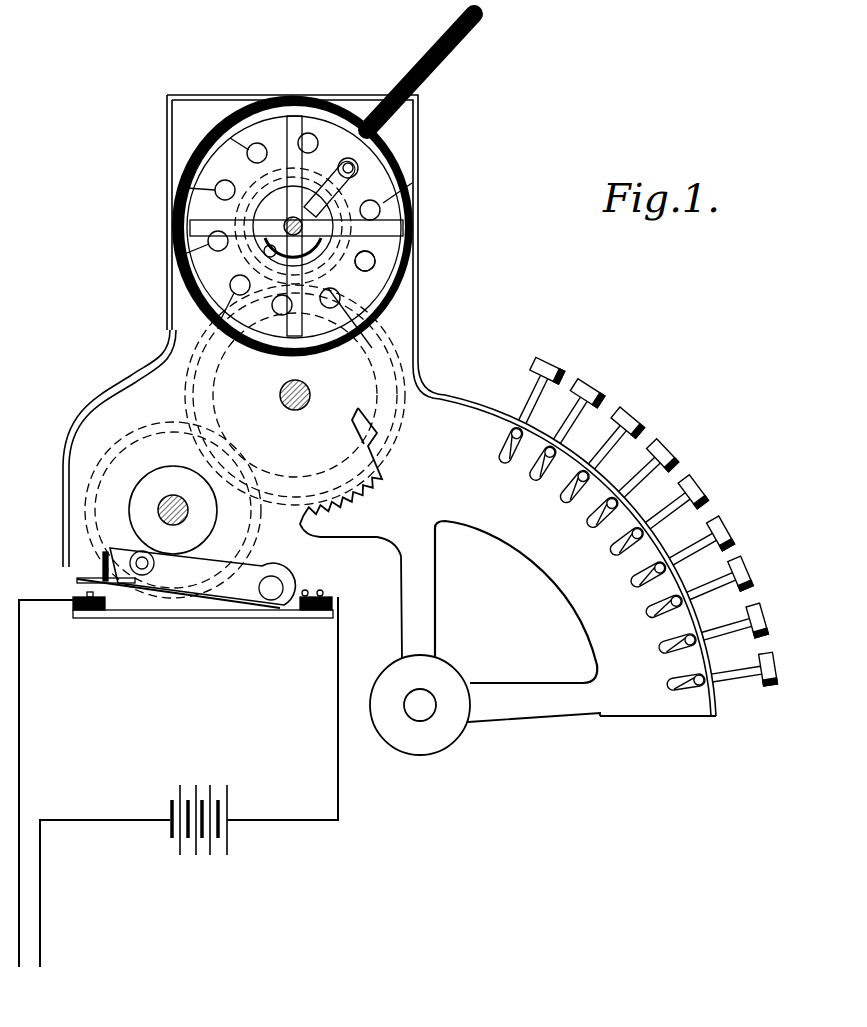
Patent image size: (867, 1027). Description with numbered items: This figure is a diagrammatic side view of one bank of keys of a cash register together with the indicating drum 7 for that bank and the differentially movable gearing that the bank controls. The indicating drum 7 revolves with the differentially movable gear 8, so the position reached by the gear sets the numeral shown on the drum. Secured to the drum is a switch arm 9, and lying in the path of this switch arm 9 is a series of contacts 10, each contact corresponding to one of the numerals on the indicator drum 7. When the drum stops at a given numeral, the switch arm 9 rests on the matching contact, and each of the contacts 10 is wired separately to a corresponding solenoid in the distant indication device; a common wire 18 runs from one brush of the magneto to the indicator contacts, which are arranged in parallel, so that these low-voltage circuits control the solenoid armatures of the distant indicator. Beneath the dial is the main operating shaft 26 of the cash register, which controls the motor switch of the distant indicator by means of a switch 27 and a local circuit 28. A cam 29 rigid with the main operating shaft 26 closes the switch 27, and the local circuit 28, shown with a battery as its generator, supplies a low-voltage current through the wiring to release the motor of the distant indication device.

The indicating drum 7 is at (403, 228).
The differentially movable gear 8 is at (398, 350).
The switch arm 9 is at (318, 182).
The contacts 10 is at (375, 268).
The common wire 18 is at (332, 203).
The main operating shaft 26 is at (172, 496).
The switch 27 is at (113, 585).
The local circuit 28 is at (19, 776).
The cam 29 is at (210, 545).